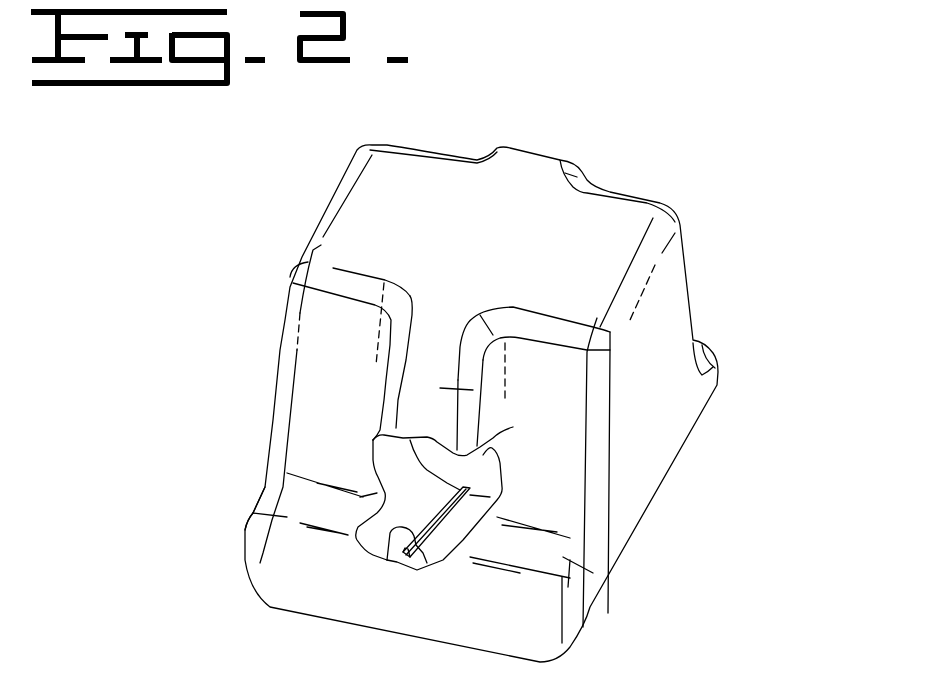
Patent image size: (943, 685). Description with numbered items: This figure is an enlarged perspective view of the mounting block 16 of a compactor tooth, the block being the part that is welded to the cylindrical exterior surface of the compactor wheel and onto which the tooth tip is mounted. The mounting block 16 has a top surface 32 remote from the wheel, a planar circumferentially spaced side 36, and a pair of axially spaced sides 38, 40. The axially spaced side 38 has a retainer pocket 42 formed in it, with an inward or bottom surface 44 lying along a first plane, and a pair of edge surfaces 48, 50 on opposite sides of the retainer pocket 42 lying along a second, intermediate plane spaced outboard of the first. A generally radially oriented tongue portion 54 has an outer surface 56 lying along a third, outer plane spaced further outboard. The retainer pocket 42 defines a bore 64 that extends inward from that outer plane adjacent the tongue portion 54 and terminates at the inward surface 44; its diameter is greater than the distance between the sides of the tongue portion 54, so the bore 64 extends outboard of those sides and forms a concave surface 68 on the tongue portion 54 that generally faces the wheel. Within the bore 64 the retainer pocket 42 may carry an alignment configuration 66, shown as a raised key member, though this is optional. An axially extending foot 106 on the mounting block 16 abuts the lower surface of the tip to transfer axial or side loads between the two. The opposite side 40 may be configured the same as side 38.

The mounting block 16 is at (622, 134).
The top surface 32 is at (613, 235).
The circumferentially spaced side 36 is at (672, 293).
The axially spaced side 38 is at (308, 370).
The axially spaced side 40 is at (430, 158).
The retainer pocket 42 is at (414, 576).
The inward surface 44 is at (446, 482).
The edge surface 48 is at (323, 352).
The edge surface 50 is at (528, 402).
The tongue portion 54 is at (408, 395).
The outer surface 56 is at (425, 427).
The bore 64 is at (500, 465).
The alignment configuration 66 is at (387, 562).
The concave surface 68 is at (430, 455).
The foot 106 is at (282, 570).